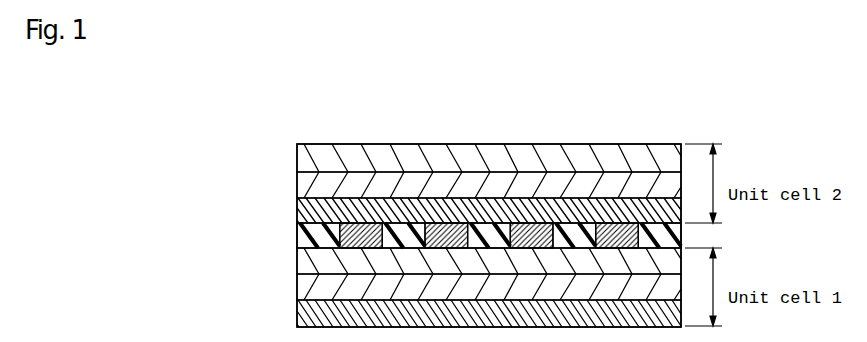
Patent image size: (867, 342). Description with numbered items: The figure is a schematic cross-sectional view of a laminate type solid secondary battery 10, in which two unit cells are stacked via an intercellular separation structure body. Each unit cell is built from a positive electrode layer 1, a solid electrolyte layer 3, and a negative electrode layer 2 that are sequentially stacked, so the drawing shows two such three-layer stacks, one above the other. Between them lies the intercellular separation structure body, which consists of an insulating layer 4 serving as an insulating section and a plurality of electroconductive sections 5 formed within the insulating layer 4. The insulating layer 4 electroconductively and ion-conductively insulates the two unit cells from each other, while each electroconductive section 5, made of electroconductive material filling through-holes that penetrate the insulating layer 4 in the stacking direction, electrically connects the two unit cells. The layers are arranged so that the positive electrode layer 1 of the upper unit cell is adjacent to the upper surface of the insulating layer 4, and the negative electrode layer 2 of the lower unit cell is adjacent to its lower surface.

The positive electrode layer 1 is at (308, 209).
The negative electrode layer 2 is at (310, 162).
The solid electrolyte layer 3 is at (306, 189).
The insulating layer 4 is at (300, 237).
The electroconductive section 5 is at (359, 236).
The laminate type solid secondary battery 10 is at (628, 123).